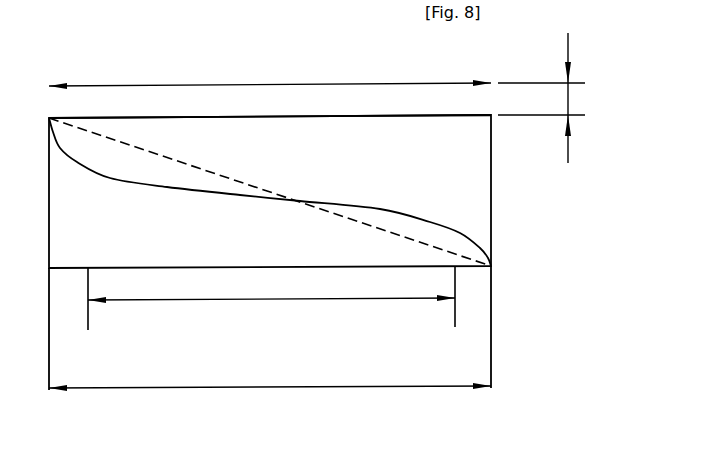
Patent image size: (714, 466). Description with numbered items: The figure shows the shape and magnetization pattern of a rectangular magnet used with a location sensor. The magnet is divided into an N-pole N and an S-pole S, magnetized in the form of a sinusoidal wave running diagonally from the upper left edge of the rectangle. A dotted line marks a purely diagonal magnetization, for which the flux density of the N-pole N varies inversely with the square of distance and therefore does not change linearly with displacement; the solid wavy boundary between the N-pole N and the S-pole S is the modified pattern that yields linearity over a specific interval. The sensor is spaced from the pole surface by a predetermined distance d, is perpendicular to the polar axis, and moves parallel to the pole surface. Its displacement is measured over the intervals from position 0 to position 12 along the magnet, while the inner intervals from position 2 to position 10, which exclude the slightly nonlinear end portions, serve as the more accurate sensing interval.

The interval start position 0 is at (52, 355).
The usable interval start position 2 is at (91, 321).
The usable interval end position 10 is at (456, 319).
The interval end position 12 is at (495, 351).
The predetermined distance d is at (564, 98).
The S-pole S is at (270, 192).
The N-pole N is at (270, 153).